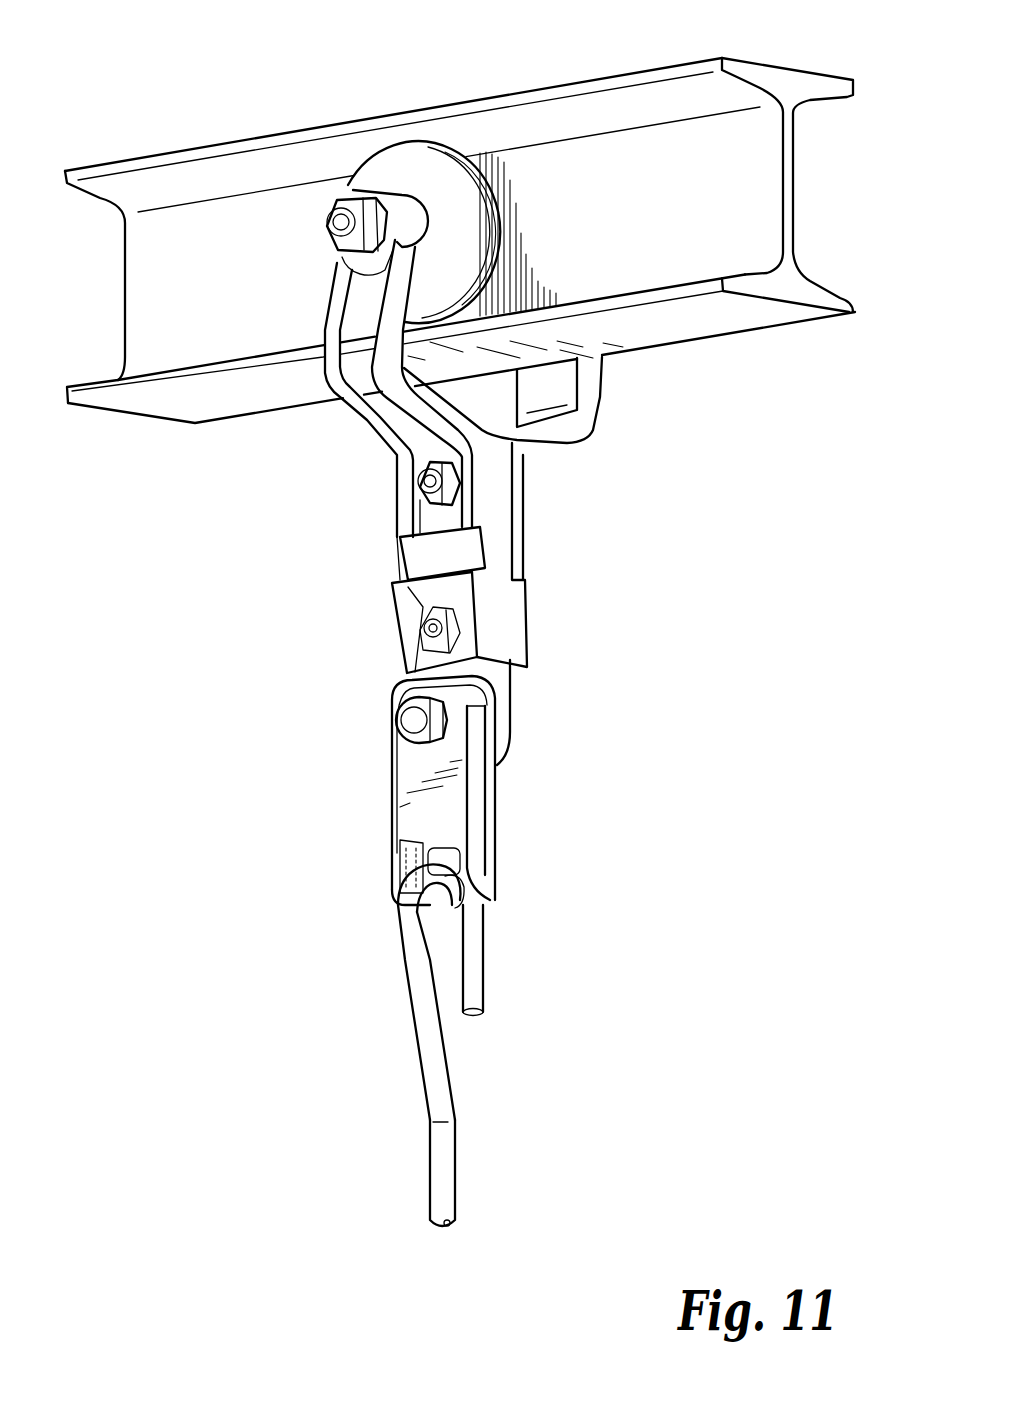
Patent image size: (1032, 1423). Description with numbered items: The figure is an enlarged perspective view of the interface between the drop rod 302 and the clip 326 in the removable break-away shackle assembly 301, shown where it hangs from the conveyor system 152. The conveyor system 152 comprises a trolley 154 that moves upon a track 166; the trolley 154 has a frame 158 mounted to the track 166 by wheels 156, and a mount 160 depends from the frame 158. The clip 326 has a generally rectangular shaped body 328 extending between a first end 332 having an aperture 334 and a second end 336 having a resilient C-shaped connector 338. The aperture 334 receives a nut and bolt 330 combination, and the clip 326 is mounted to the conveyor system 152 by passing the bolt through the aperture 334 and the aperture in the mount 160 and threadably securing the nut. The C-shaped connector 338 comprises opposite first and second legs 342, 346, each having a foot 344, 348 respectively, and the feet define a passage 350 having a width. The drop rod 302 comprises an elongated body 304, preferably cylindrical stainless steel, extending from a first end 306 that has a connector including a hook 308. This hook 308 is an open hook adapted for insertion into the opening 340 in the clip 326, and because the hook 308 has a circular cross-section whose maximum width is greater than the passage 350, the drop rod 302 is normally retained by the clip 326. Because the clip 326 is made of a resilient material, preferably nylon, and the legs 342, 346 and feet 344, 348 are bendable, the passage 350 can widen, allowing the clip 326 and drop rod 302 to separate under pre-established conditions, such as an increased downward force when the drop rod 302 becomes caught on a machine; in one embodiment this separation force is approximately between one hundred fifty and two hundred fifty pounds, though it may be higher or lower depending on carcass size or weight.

The track 166 is at (528, 90).
The wheels 156 is at (390, 163).
The conveyor system 152 is at (266, 477).
The frame 158 is at (372, 440).
The mount 160 is at (507, 742).
The trolley 154 is at (400, 646).
The removable break-away shackle assembly 301 is at (686, 644).
The body 328 is at (455, 796).
The nut and bolt 330 is at (408, 715).
The first end 332 is at (476, 688).
The aperture 334 is at (455, 720).
The second end 336 is at (393, 812).
The C-shaped connector 338 is at (398, 852).
The opening 340 is at (447, 840).
The first leg 342 is at (396, 905).
The foot 344 is at (400, 912).
The second leg 346 is at (487, 897).
The foot 348 is at (485, 928).
The passage 350 is at (460, 938).
The clip 326 is at (486, 848).
The hook 308 is at (485, 984).
The drop rod 302 is at (336, 1149).
The first end 306 is at (457, 1123).
The body 304 is at (455, 1195).